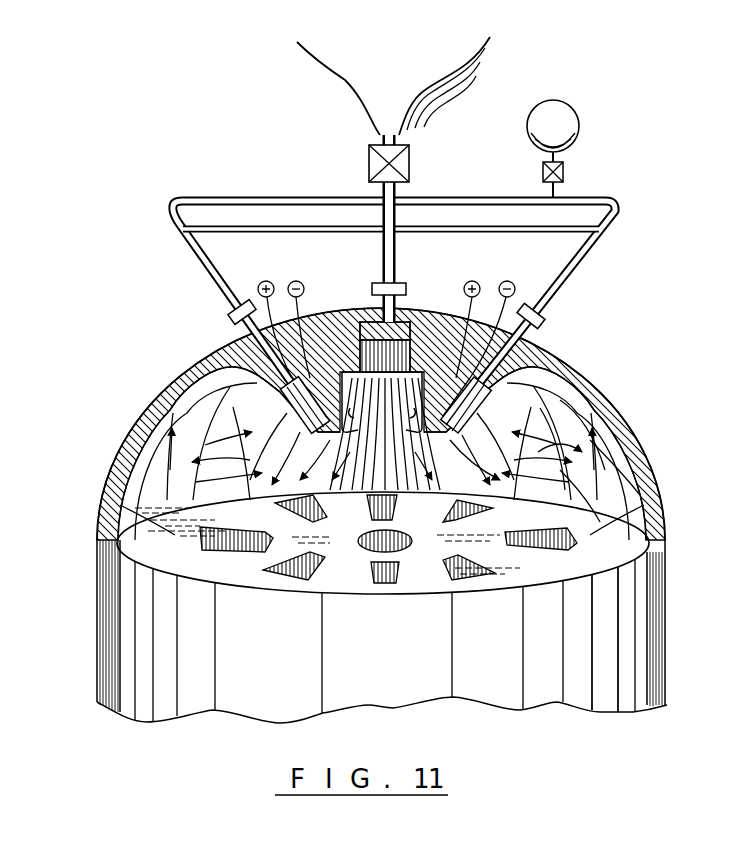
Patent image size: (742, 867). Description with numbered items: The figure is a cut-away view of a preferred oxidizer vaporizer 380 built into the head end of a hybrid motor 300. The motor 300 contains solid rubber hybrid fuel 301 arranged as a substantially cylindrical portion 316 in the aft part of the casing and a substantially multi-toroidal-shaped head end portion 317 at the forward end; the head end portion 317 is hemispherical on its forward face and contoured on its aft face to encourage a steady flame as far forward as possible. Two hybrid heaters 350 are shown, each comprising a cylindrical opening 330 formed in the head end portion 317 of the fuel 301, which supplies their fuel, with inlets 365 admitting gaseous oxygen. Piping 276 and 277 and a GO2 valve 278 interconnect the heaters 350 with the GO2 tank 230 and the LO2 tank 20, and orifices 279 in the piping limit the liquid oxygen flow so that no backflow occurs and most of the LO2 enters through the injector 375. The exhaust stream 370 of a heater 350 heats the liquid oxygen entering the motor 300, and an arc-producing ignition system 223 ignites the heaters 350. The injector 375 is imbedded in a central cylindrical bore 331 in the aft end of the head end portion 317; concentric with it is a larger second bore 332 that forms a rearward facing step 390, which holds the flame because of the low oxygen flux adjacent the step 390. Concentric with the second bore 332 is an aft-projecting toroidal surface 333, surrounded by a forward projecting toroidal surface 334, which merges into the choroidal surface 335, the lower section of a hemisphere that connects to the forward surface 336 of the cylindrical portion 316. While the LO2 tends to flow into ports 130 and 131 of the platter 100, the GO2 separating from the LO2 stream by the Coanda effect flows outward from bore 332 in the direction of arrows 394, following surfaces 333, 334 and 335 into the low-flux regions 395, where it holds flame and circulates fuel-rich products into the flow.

The LO2 tank 20 is at (342, 78).
The platter 100 is at (617, 560).
The ports 130 is at (283, 577).
The port 131 is at (372, 556).
The arc-producing ignition system 223 is at (266, 280).
The GO2 tank 230 is at (579, 135).
The piping 276 is at (222, 197).
The piping 277 is at (318, 233).
The GO2 valve 278 is at (566, 172).
The orifices 279 is at (270, 240).
The motor 300 is at (97, 565).
The solid fuel 301 is at (97, 672).
The substantially cylindrical portion 316 is at (628, 598).
The substantially multi-toroidal-shaped portion 317 is at (583, 388).
The cylindrical openings 330 is at (224, 358).
The central cylindrical bore 331 is at (470, 380).
The second bore 332 is at (200, 388).
The aft-projecting toroidal surface 333 is at (484, 450).
The forward projecting toroidal surface 334 is at (575, 405).
The choroidal surface 335 is at (633, 481).
The forward surface 336 is at (600, 522).
The hybrid heaters 350 is at (243, 383).
The inlets 365 is at (226, 313).
The exhaust stream 370 is at (372, 472).
The injector 375 is at (363, 318).
The vaporizer 380 is at (638, 272).
The rearward facing step 390 is at (312, 375).
The arrows 394 is at (190, 444).
The low-flux regions 395 is at (106, 503).